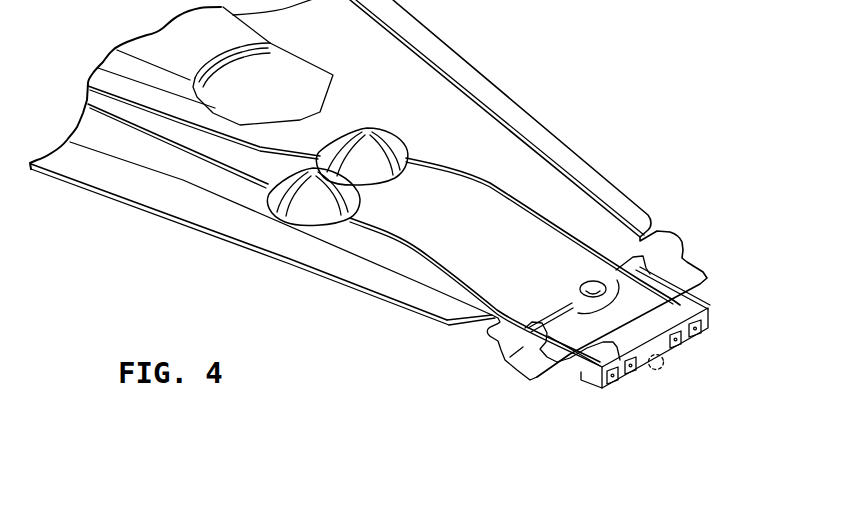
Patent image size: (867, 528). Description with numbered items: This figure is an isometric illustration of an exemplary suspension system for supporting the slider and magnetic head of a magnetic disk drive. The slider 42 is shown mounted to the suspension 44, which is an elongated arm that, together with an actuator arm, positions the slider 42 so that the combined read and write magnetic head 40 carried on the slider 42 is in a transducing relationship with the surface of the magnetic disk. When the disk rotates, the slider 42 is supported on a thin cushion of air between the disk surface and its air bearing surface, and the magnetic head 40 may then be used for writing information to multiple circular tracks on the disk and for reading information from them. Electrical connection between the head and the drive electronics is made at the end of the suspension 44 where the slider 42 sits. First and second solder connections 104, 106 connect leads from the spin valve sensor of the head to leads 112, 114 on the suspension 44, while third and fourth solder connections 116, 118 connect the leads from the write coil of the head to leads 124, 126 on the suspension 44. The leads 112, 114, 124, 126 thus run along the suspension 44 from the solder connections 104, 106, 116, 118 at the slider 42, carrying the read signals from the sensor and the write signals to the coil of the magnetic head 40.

The suspension 44 is at (508, 94).
The lead 114 is at (566, 223).
The lead 124 is at (432, 253).
The lead 126 is at (486, 190).
The lead 112 is at (386, 236).
The slider 42 is at (552, 386).
The first solder connection 104 is at (596, 389).
The third solder connection 116 is at (628, 376).
The fourth solder connection 118 is at (681, 346).
The second solder connection 106 is at (703, 328).
The magnetic head 40 is at (661, 371).